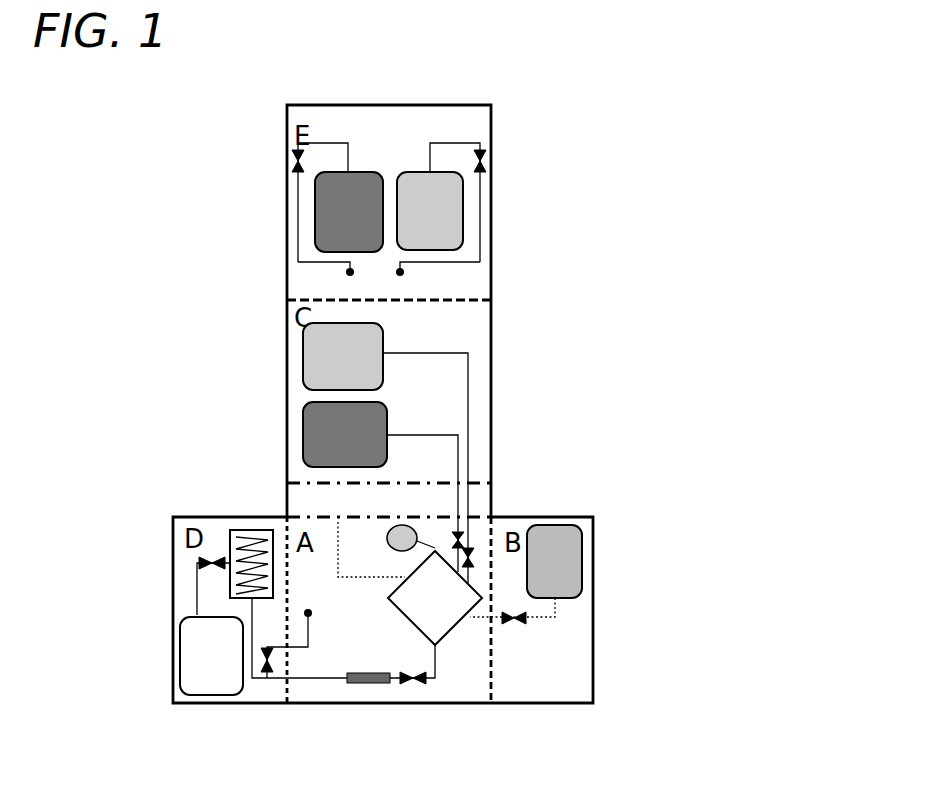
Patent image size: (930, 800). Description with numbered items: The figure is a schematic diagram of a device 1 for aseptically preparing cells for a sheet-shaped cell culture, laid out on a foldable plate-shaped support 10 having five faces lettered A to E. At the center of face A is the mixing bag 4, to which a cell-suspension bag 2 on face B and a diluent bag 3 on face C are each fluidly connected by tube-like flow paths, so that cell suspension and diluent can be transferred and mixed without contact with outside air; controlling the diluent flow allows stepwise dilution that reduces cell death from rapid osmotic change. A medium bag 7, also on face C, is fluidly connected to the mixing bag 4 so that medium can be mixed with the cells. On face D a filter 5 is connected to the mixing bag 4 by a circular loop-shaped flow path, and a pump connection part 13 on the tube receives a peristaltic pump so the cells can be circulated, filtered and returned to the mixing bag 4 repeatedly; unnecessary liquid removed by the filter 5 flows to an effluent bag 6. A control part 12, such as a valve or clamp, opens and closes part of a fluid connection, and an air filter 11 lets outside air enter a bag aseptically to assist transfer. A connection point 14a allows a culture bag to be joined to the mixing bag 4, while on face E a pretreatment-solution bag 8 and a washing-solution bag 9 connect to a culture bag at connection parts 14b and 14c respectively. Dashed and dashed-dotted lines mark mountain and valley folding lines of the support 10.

The device 1 is at (527, 228).
The cell-suspension bag 2 is at (554, 561).
The diluent bag 3 is at (345, 434).
The mixing bag 4 is at (435, 598).
The filter 5 is at (250, 528).
The effluent bag 6 is at (211, 656).
The medium bag 7 is at (343, 356).
The pretreatment-solution bag 8 is at (430, 211).
The washing-solution bag 9 is at (349, 212).
The support 10 is at (497, 460).
The air filter 11 is at (383, 538).
The control part 12 is at (197, 562).
The pump connection part 13 is at (370, 687).
The connection point 14a is at (308, 619).
The connection part 14b is at (407, 272).
The connection part 14c is at (345, 273).